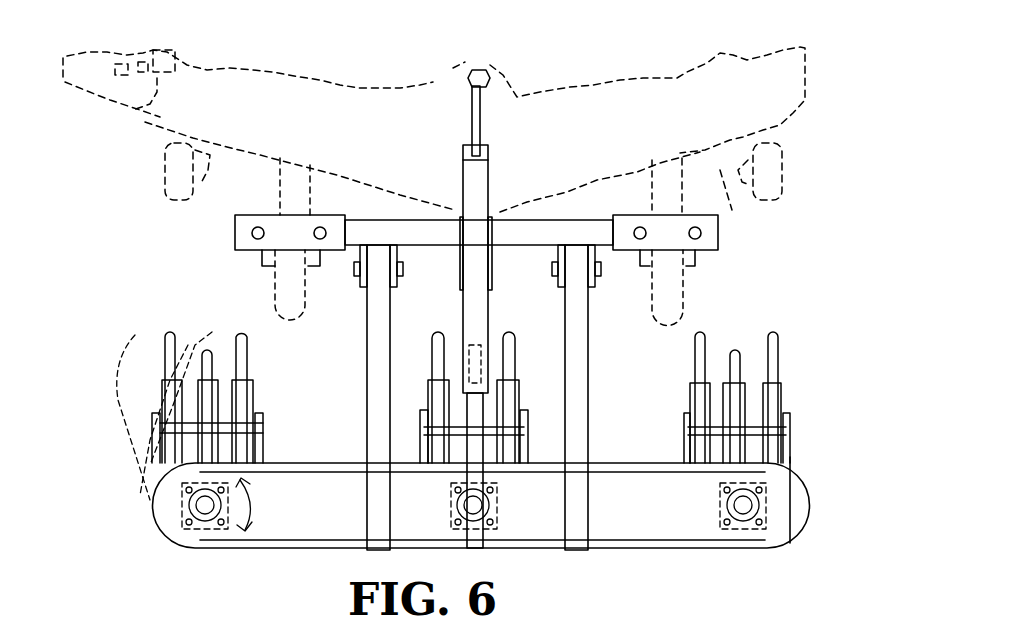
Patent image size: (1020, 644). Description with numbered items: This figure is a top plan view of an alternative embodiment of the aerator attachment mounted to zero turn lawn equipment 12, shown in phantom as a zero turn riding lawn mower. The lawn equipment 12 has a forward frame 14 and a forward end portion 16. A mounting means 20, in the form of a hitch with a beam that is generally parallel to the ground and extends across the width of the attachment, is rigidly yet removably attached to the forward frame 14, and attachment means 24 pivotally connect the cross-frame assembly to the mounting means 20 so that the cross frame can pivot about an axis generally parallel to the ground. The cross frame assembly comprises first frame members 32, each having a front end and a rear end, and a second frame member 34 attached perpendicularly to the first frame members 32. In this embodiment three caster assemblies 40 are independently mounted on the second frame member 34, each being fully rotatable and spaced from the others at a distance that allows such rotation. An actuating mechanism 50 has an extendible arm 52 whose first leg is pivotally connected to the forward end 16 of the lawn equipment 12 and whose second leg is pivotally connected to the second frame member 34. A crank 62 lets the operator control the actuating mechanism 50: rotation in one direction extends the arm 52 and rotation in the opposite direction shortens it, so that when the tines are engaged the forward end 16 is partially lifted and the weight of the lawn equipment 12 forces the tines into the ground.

The zero turn lawn equipment 12 is at (434, 143).
The forward frame 14 is at (479, 242).
The forward end portion 16 is at (604, 178).
The mounting means 20 is at (478, 247).
The attachment means 24 is at (357, 268).
The first frame member 32 is at (481, 397).
The second frame member 34 is at (667, 456).
The caster assembly 40 is at (547, 312).
The actuating mechanism 50 is at (512, 239).
The extendible arm 52 is at (472, 476).
The crank 62 is at (450, 95).